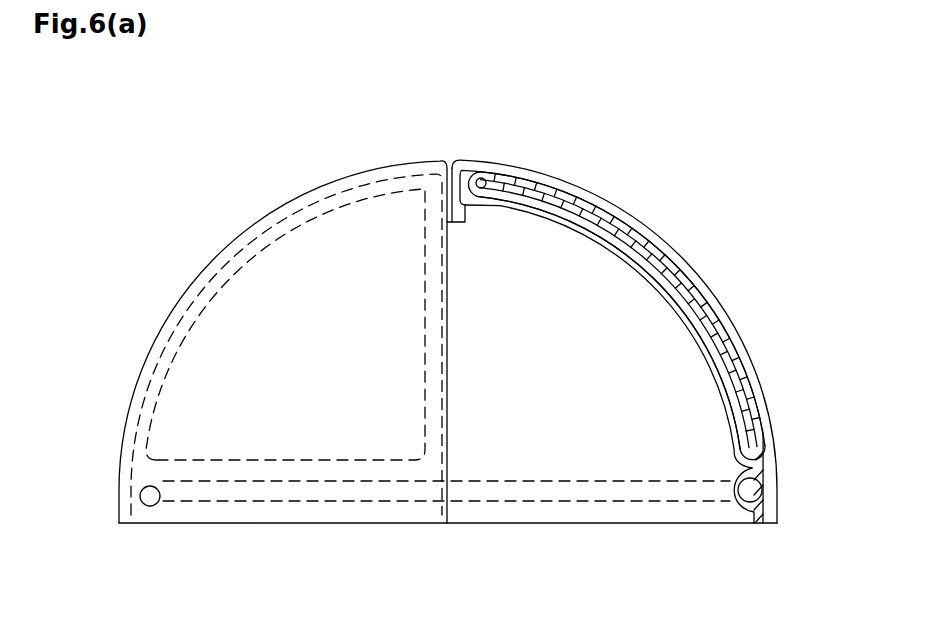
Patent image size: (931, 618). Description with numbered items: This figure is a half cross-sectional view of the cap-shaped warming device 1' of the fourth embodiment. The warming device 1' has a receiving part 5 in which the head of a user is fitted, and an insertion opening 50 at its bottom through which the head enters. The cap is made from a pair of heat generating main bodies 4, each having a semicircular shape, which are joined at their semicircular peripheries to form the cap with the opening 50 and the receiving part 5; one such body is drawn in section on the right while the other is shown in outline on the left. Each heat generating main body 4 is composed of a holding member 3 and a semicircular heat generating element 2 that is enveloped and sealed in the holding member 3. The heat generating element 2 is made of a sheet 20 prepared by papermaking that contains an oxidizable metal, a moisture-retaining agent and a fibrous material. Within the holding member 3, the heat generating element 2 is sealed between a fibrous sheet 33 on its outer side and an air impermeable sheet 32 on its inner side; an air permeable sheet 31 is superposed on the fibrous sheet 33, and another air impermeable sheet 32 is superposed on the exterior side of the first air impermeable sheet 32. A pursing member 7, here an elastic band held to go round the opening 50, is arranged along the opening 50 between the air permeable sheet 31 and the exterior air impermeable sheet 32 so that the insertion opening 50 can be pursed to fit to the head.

The warming device 1' is at (478, 330).
The heat generating element 2 is at (272, 244).
The sheet 20 is at (478, 338).
The holding member 3 is at (623, 67).
The air permeable sheet 31 is at (537, 170).
The air impermeable sheet 32 is at (604, 219).
The fibrous sheet 33 is at (580, 193).
The heat generating main body 4 is at (188, 276).
The receiving part 5 is at (540, 306).
The pursing member 7 is at (764, 490).
The insertion opening 50 is at (612, 515).